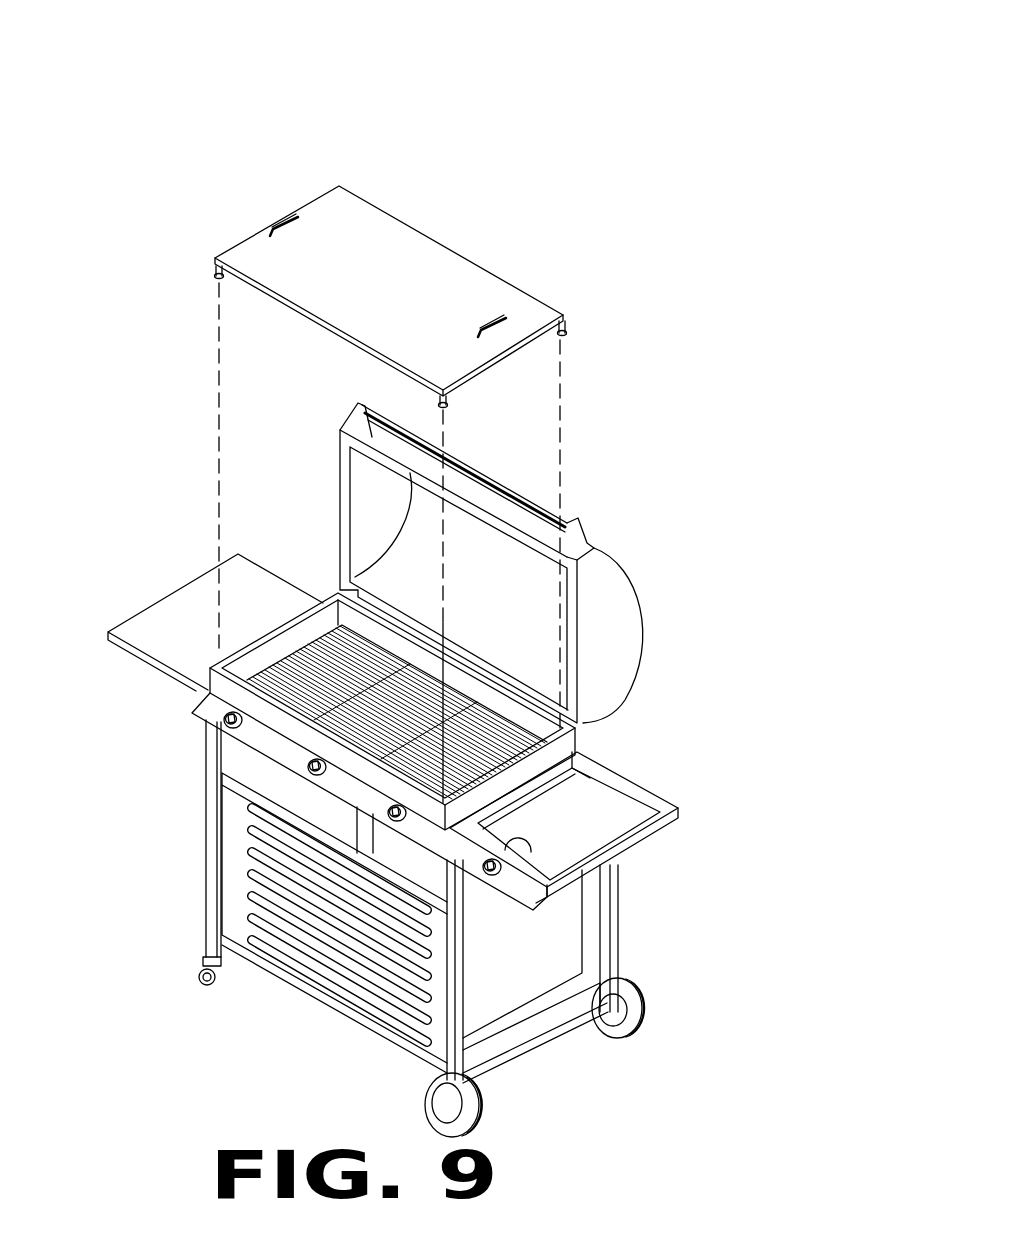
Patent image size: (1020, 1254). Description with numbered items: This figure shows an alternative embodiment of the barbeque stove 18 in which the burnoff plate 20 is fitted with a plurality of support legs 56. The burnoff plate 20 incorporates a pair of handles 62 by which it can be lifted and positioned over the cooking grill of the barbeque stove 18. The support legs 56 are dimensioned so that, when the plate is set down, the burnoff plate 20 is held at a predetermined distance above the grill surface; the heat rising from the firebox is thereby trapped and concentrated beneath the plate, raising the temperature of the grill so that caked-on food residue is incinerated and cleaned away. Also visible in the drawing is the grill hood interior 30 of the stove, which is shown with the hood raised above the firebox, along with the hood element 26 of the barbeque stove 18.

The barbeque stove 18 is at (663, 102).
The burnoff plate 20 is at (400, 295).
The hood 26 is at (643, 605).
The grill hood interior 30 is at (357, 528).
The support legs 56 is at (214, 266).
The handles 62 is at (283, 220).